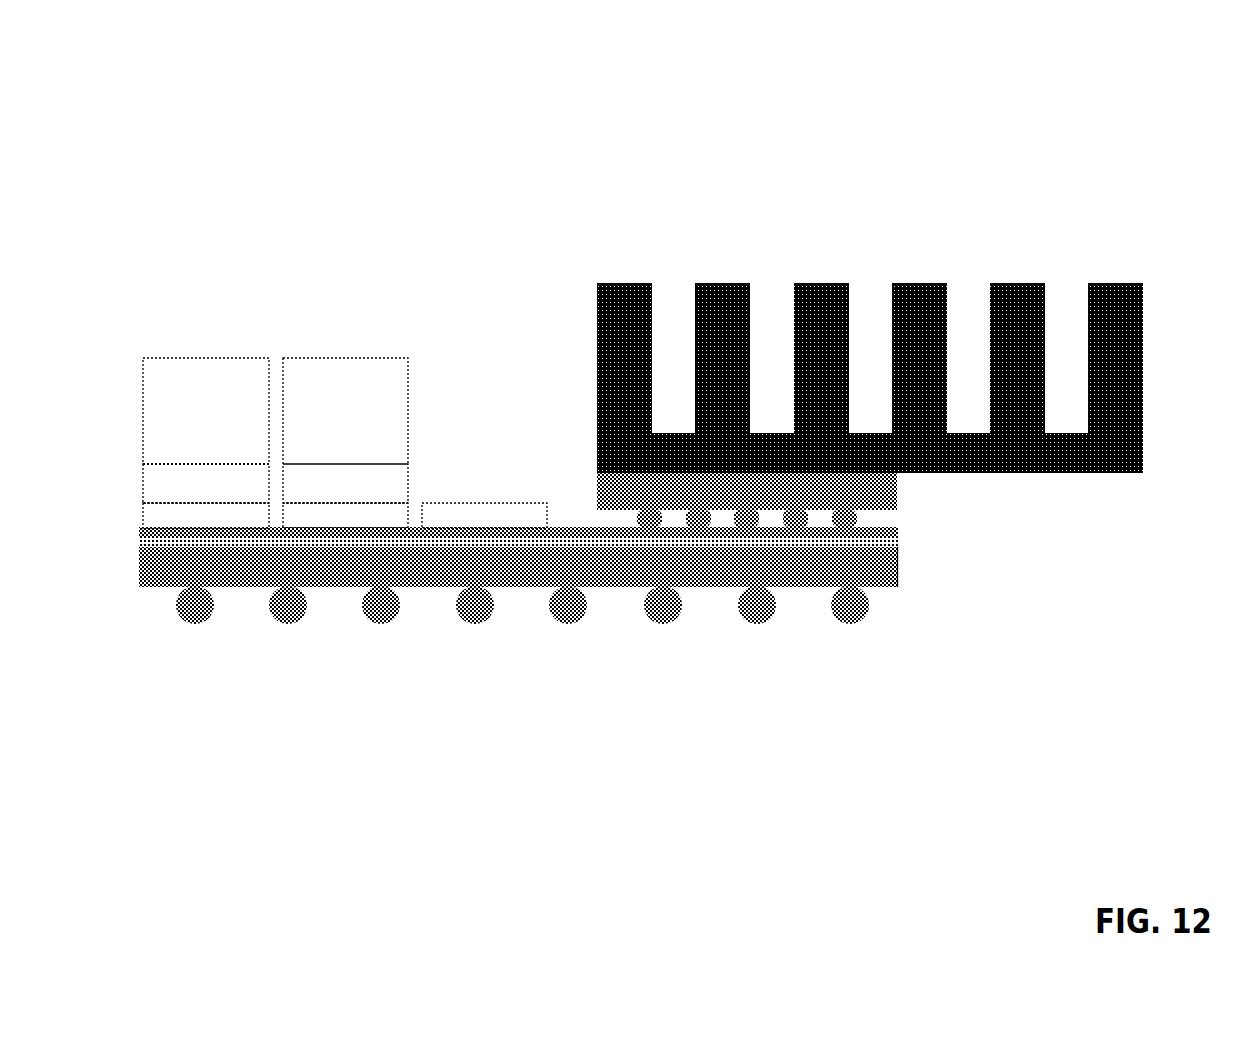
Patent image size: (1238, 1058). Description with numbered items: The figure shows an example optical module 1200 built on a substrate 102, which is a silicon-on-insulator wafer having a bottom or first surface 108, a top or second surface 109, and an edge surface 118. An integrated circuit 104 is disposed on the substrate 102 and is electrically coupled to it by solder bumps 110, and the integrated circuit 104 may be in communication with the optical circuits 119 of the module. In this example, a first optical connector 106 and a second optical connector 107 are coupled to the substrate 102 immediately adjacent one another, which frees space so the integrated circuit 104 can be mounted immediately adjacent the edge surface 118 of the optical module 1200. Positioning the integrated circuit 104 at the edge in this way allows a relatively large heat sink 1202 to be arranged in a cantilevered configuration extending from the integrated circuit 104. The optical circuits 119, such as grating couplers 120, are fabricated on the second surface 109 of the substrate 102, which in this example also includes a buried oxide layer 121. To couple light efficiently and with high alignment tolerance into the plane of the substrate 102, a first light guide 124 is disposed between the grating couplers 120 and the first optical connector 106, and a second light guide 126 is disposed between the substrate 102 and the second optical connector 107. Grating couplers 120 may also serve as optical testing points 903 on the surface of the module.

The optical module 1200 is at (920, 68).
The heat sink 1202 is at (697, 286).
The integrated circuit 104 is at (897, 493).
The second surface 109 is at (638, 523).
The optical testing points 903 is at (494, 455).
The first optical connector 106 is at (173, 366).
The second optical connector 107 is at (398, 370).
The first light guide 124 is at (147, 478).
The second light guide 126 is at (400, 478).
The grating couplers 120 is at (147, 518).
The optical circuits 119 is at (178, 535).
The buried oxide (BOX) layer 121 is at (732, 538).
The substrate 102 is at (147, 575).
The edge surface 118 is at (903, 565).
The first surface 108 is at (625, 589).
The solder bumps 110 is at (380, 617).